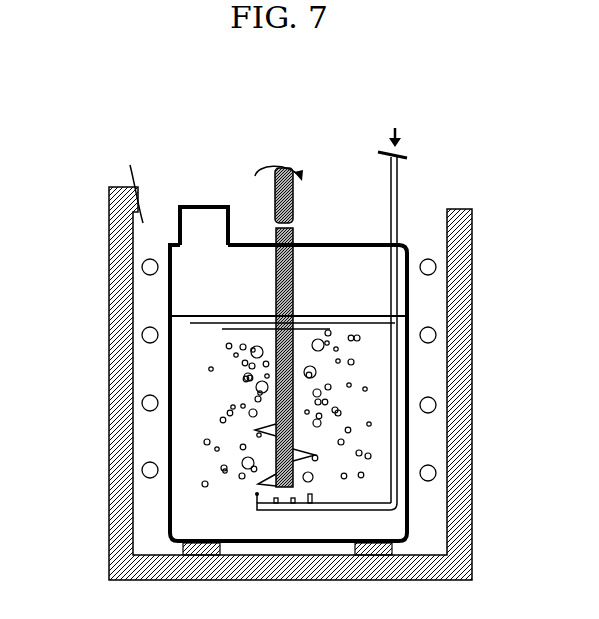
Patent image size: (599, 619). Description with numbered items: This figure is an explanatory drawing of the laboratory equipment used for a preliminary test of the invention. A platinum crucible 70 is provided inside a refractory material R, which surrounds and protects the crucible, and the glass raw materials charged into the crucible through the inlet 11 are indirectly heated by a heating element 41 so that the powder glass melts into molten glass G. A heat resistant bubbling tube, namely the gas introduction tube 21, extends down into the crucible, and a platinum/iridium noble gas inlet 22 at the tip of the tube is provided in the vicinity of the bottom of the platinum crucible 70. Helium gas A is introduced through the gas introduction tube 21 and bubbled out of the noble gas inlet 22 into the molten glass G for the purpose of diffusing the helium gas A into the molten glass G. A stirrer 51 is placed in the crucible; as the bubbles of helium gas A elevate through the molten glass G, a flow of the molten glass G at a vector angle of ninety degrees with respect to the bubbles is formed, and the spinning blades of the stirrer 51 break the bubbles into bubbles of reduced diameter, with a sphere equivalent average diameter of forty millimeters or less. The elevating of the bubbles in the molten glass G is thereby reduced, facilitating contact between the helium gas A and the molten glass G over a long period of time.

The inlet 11 is at (200, 207).
The stirrer 51 is at (294, 236).
The gas introduction tube 21 is at (398, 186).
The noble gas inlet 22 is at (257, 494).
The platinum crucible 70 is at (412, 377).
The heating element 41 is at (142, 470).
The refractory material R is at (127, 270).
The molten glass G is at (220, 437).
The helium gas A is at (403, 133).